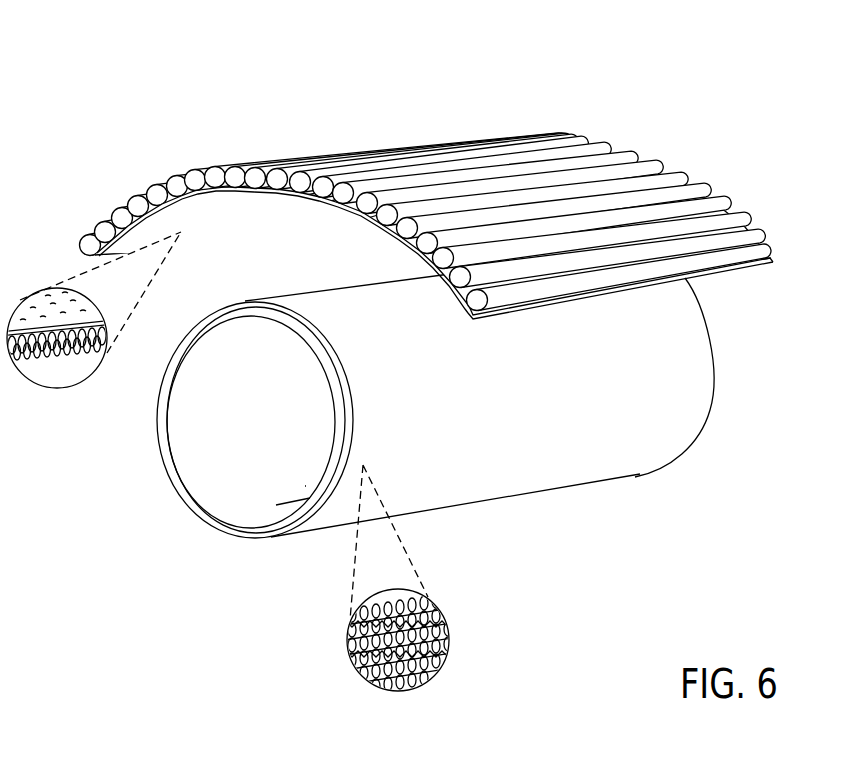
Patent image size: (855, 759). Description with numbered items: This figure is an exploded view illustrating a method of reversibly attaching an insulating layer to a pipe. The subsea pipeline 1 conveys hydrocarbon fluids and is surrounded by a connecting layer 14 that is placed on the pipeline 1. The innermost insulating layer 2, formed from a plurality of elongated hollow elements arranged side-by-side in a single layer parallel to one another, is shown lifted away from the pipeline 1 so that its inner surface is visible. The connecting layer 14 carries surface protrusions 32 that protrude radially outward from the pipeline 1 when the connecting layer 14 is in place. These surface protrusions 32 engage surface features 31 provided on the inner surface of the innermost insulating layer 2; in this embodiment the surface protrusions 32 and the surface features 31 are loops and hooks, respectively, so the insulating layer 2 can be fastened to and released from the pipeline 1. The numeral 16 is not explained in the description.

The subsea pipeline 1 is at (432, 421).
The insulating layer 2 is at (427, 181).
The connecting layer 14 is at (593, 443).
The fabric layer between mat and cylinder 16 is at (210, 223).
The surface features 31 is at (47, 381).
The surface protrusions 32 is at (448, 627).